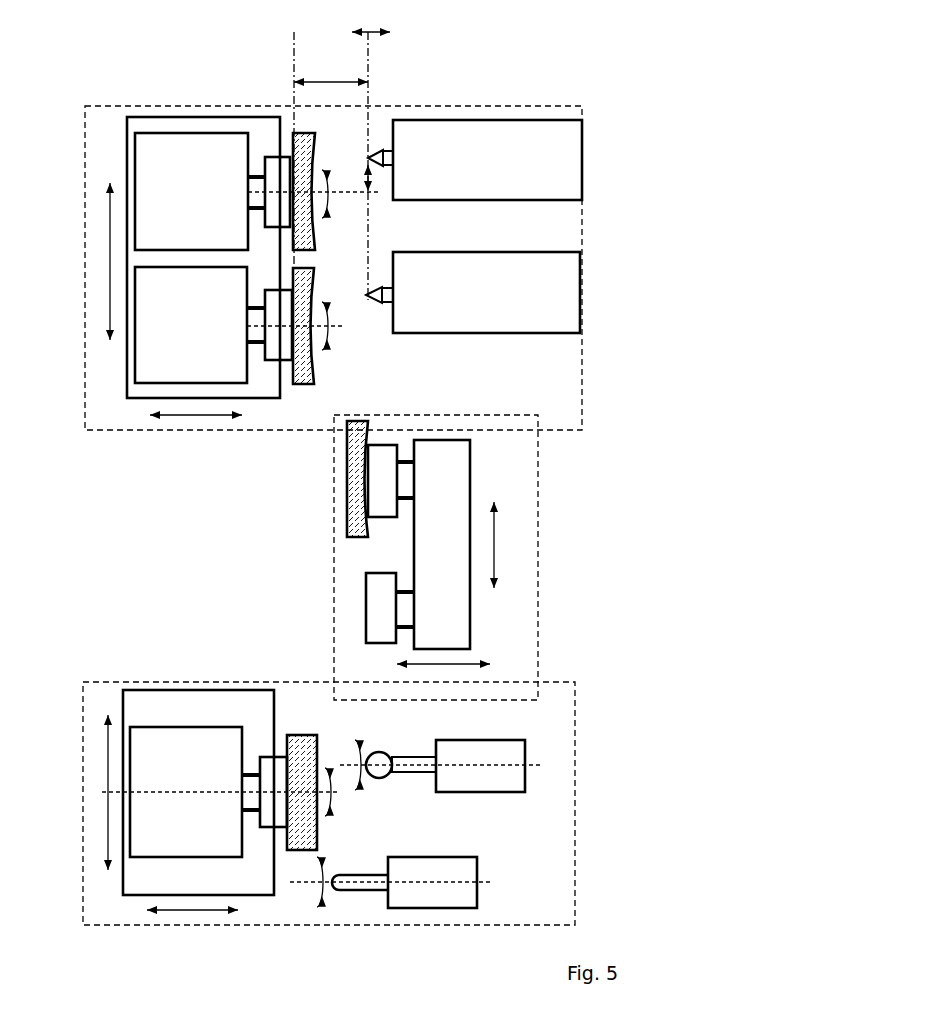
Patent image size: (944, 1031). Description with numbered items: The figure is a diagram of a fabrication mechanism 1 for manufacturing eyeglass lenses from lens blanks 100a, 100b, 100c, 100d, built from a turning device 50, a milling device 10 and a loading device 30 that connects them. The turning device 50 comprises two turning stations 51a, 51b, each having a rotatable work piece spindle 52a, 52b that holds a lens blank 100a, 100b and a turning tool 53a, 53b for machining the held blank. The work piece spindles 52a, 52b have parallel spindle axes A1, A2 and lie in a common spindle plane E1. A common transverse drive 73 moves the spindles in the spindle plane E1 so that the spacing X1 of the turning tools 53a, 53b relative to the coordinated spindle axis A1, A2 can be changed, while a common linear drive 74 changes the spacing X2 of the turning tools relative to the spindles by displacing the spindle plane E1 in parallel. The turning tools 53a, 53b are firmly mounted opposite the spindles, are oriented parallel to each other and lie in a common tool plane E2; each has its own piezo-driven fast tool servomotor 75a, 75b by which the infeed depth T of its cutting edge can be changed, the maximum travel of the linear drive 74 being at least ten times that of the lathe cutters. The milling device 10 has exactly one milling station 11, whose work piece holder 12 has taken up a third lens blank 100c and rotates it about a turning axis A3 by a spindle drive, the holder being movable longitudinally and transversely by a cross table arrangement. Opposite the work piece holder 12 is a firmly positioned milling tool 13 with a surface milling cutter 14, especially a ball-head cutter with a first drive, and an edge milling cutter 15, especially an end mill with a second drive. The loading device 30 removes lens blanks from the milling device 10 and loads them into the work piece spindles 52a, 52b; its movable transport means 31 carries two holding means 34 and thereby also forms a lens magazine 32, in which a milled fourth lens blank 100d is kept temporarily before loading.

The fabrication mechanism 1 is at (604, 74).
The milling device 10 is at (102, 927).
The milling station 11 is at (367, 810).
The work piece holder 12 is at (205, 812).
The milling tool 13 is at (478, 867).
The surface milling cutter 14 is at (380, 782).
The edge milling cutter 15 is at (375, 893).
The loading device 30 is at (542, 584).
The transport means 31 is at (446, 609).
The lens magazine 32 is at (398, 480).
The holding means 34 is at (370, 462).
The turning device 50 is at (105, 433).
The first turning station 51a is at (525, 110).
The second turning station 51b is at (524, 196).
The work piece spindle 52a is at (209, 205).
The work piece spindle 52b is at (209, 342).
The turning tool 53a is at (381, 150).
The turning tool 53b is at (377, 283).
The transverse drive 73 is at (108, 258).
The linear drive 74 is at (185, 418).
The fast tool servomotor 75a is at (509, 172).
The fast tool servomotor 75b is at (511, 306).
The lens blank 100a is at (302, 147).
The lens blank 100b is at (303, 387).
The third lens blank 100c is at (300, 853).
The fourth lens blank 100d is at (343, 520).
The spindle axis A1 is at (280, 190).
The spindle axis A2 is at (282, 325).
The turning axis A3 is at (170, 788).
The spindle plane E1 is at (282, 150).
The tool plane E2 is at (383, 166).
The spacing X1 is at (353, 177).
The spacing X2 is at (331, 69).
The infeed depth T is at (371, 18).